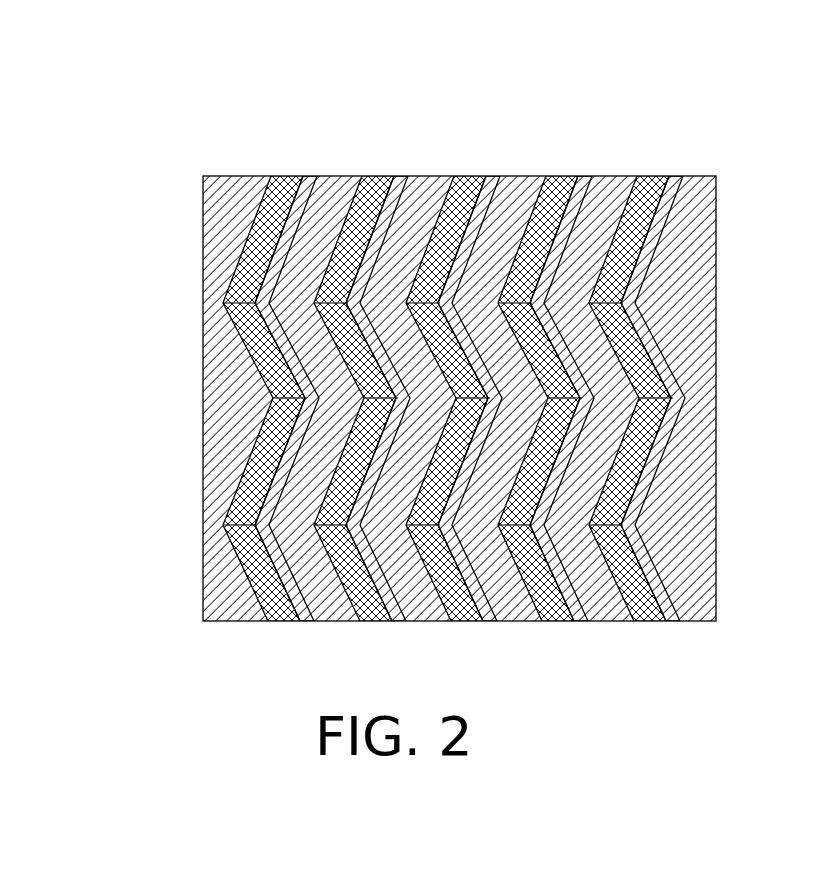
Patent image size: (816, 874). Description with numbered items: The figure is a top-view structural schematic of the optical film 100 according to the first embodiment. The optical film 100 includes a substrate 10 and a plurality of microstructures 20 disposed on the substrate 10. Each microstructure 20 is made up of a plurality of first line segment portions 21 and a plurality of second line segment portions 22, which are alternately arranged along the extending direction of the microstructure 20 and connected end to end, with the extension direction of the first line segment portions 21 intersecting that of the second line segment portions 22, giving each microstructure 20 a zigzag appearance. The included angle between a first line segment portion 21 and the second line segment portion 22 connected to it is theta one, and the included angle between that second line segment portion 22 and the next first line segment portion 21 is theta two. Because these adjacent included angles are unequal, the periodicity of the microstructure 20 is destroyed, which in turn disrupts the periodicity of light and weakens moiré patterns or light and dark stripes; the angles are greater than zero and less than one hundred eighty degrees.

The optical film 100 is at (382, 355).
The substrate 10 is at (212, 215).
The microstructure 20 is at (366, 398).
The second line segment portion 22 is at (238, 514).
The first line segment portion 21 is at (245, 558).